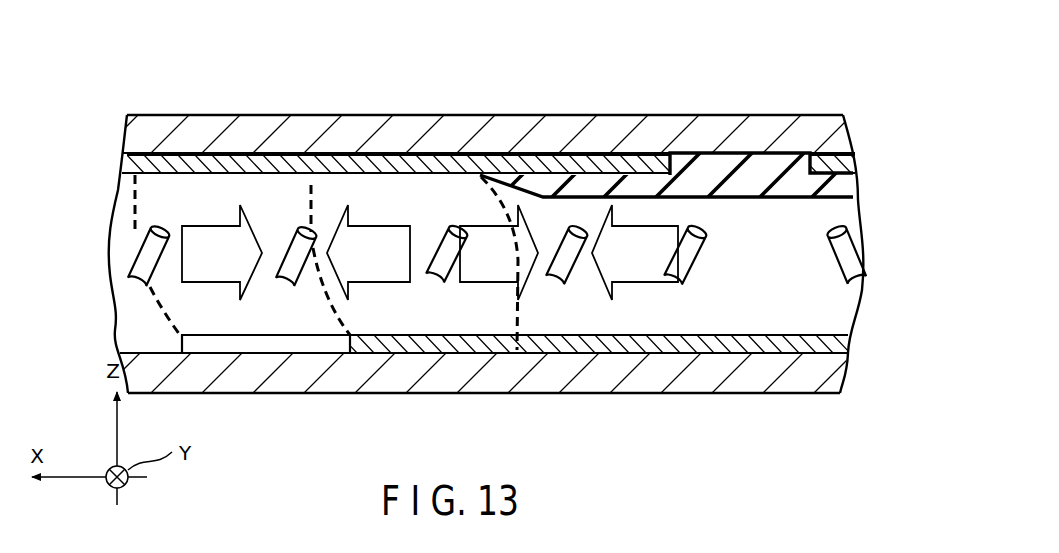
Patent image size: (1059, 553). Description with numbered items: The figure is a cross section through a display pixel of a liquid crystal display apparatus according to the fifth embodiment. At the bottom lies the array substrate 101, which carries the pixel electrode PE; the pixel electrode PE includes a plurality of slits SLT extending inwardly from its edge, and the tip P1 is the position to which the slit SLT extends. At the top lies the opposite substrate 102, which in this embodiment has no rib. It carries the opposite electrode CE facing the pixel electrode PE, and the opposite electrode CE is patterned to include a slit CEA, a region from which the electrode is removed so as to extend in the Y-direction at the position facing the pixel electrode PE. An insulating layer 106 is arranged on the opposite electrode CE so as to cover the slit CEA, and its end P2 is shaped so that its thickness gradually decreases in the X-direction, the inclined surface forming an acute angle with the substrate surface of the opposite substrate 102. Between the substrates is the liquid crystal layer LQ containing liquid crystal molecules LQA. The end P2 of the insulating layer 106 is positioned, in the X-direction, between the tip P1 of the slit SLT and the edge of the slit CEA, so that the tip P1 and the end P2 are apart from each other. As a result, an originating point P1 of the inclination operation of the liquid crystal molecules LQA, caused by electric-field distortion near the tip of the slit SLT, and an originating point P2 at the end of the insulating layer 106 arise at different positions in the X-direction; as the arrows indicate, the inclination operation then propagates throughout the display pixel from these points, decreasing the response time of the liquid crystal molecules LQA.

The array substrate 101 is at (808, 395).
The opposite substrate 102 is at (820, 113).
The insulating layer 106 is at (627, 185).
The opposite electrode CE is at (548, 165).
The slit CEA is at (745, 165).
The liquid crystal layer LQ is at (157, 203).
The liquid crystal molecules LQA is at (128, 270).
The tip of the slit SLT P1 is at (345, 340).
The end of the insulating layer P2 is at (481, 176).
The slit SLT is at (250, 345).
The pixel electrode PE is at (670, 342).